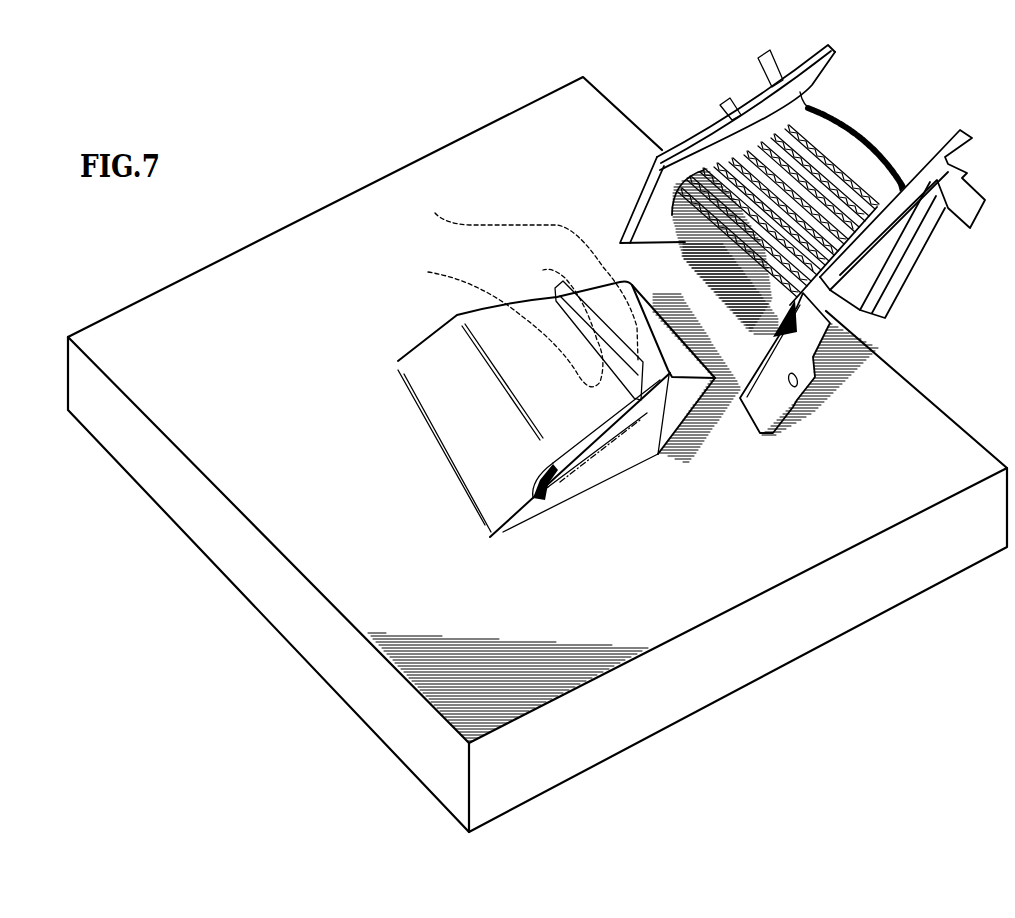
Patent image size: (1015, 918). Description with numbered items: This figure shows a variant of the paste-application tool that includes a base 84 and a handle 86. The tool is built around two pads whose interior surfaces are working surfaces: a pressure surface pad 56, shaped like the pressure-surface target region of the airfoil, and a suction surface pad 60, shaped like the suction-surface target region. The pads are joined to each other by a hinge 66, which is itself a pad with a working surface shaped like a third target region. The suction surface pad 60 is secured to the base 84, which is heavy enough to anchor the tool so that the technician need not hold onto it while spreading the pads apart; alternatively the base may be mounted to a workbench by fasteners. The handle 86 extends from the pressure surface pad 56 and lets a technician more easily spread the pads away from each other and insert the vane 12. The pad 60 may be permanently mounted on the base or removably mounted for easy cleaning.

The vane 12 is at (905, 122).
The pressure surface pad 56 is at (597, 437).
The suction surface pad 60 is at (623, 462).
The hinge 66 is at (472, 418).
The base 84 is at (140, 340).
The handle 86 is at (622, 380).